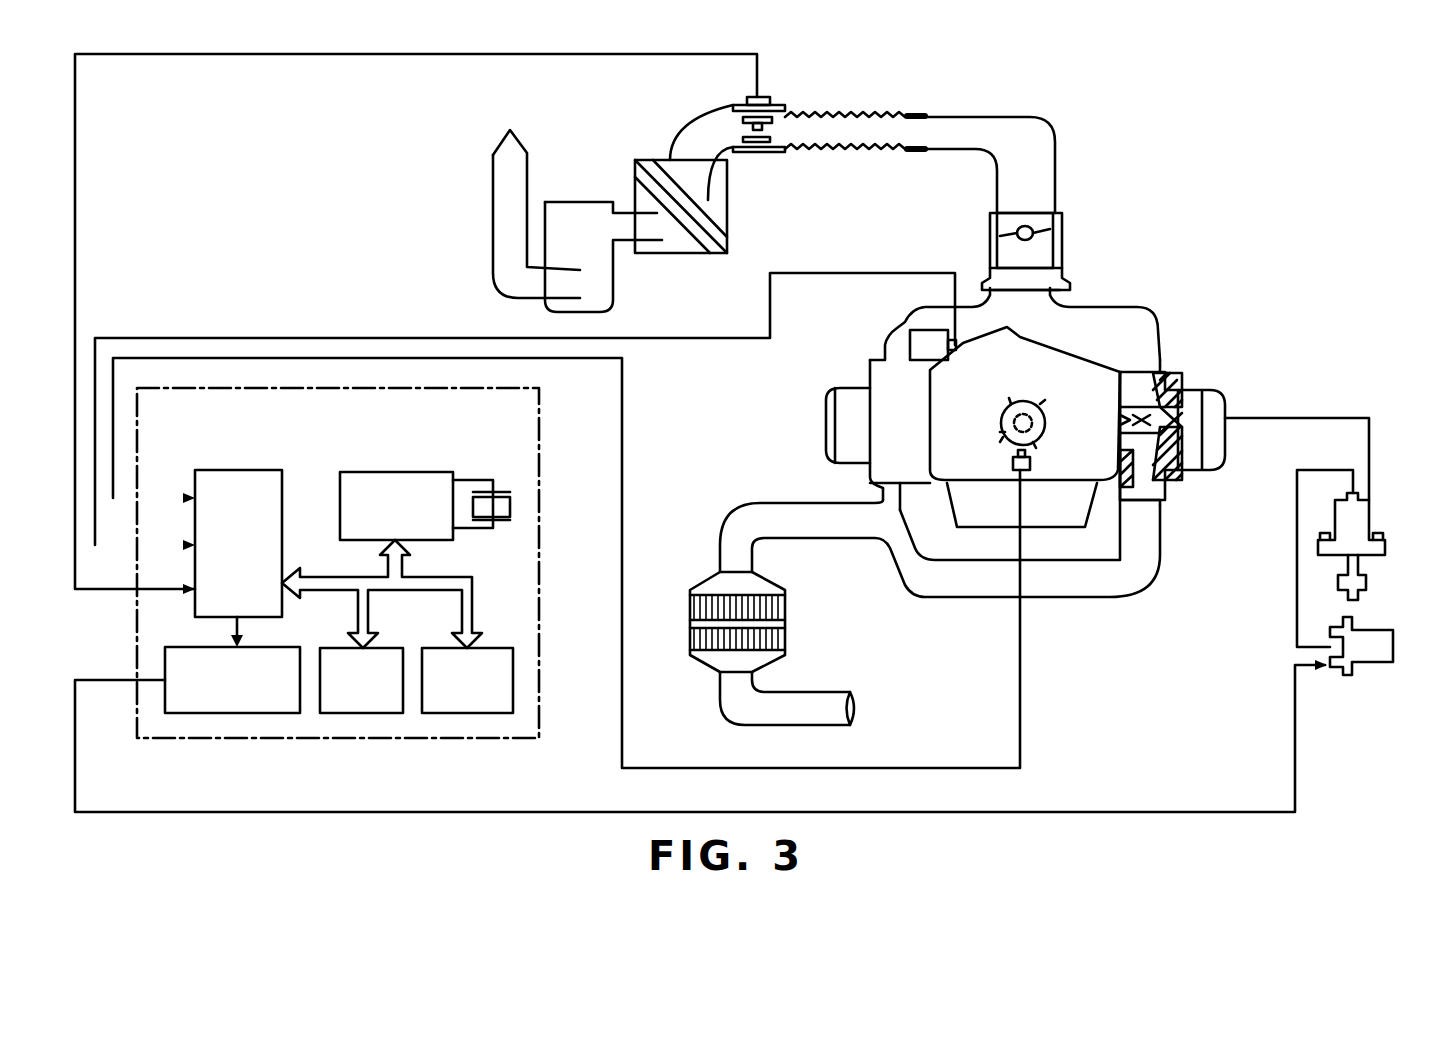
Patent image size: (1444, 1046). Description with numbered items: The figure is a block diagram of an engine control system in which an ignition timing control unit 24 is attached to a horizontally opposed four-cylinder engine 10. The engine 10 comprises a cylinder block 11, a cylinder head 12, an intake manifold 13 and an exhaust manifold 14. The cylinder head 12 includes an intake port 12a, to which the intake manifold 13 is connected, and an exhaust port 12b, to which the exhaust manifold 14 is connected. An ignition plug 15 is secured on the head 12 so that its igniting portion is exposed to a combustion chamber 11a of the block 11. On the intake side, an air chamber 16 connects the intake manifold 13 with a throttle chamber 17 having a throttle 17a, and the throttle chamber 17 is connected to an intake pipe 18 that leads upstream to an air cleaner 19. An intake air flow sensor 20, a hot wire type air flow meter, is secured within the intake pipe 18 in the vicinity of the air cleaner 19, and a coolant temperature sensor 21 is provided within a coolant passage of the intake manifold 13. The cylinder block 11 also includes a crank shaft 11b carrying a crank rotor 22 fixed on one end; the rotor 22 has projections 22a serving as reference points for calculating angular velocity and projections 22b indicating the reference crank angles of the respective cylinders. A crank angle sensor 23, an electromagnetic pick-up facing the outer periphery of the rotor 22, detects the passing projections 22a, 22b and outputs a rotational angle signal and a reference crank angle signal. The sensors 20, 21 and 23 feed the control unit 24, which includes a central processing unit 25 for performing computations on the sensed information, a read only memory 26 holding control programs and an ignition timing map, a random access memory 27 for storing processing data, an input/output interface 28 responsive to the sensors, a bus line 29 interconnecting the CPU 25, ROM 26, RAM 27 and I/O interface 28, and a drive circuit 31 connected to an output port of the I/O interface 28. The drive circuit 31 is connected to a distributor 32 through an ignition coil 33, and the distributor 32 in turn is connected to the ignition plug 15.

The engine 10 is at (1064, 400).
The cylinder block 11 is at (1189, 505).
The combustion chamber 11a is at (1122, 432).
The crank shaft 11b is at (1003, 432).
The cylinder head 12 is at (1026, 432).
The intake port 12a is at (1148, 378).
The exhaust port 12b is at (1170, 490).
The intake manifold 13 is at (1120, 313).
The exhaust manifold 14 is at (1085, 597).
The ignition plug 15 is at (1122, 415).
The air chamber 16 is at (1060, 283).
The throttle chamber 17 is at (1062, 212).
The throttle 17a is at (1040, 222).
The intake pipe 18 is at (1005, 116).
The air cleaner 19 is at (650, 165).
The intake air flow sensor 20 is at (770, 100).
The coolant temperature sensor 21 is at (950, 343).
The crank rotor 22 is at (1017, 442).
The projections 22a is at (1010, 400).
The projections 22b is at (1045, 410).
The crank angle sensor 23 is at (1013, 470).
The ignition timing control unit 24 is at (540, 470).
The central processing unit 25 is at (340, 500).
The read only memory 26 is at (466, 713).
The random access memory 27 is at (362, 713).
The input/output interface 28 is at (218, 470).
The bus line 29 is at (472, 578).
The drive circuit 31 is at (235, 713).
The distributor 32 is at (1375, 515).
The ignition coil 33 is at (1375, 665).